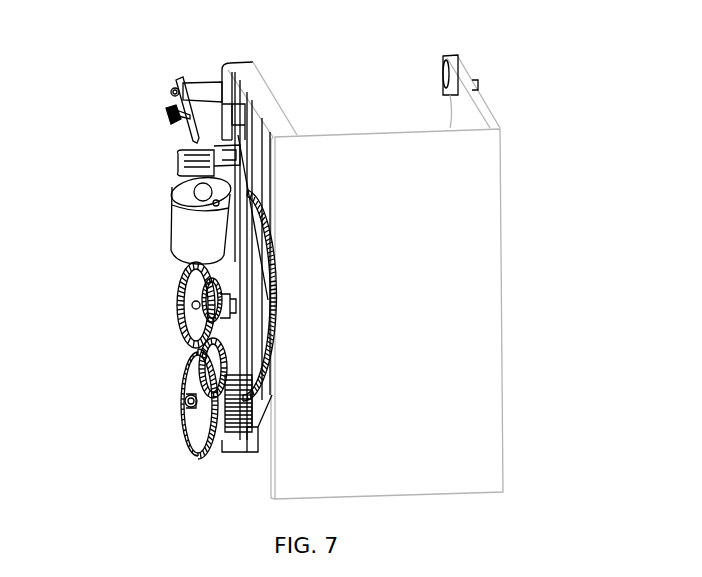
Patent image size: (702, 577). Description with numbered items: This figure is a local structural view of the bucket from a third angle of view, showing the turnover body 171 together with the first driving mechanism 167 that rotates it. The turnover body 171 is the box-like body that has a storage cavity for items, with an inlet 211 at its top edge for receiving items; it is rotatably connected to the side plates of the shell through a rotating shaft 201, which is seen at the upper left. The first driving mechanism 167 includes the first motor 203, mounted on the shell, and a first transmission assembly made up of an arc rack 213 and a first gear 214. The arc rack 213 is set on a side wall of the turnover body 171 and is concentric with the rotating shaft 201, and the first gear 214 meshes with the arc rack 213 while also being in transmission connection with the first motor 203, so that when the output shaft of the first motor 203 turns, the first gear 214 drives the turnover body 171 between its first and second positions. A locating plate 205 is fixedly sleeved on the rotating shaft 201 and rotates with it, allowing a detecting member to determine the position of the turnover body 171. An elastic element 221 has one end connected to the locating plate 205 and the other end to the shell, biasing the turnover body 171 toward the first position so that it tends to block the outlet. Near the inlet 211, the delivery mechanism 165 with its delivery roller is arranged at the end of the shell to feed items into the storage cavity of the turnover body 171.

The delivery mechanism 165 is at (210, 148).
The first driving mechanism 167 is at (173, 328).
The turnover body 171 is at (432, 178).
The rotating shaft 201 is at (210, 82).
The first motor 203 is at (175, 198).
The locating plate 205 is at (173, 90).
The inlet 211 is at (415, 110).
The arc rack 213 is at (185, 283).
The first gear 214 is at (240, 403).
The elastic element 221 is at (166, 113).